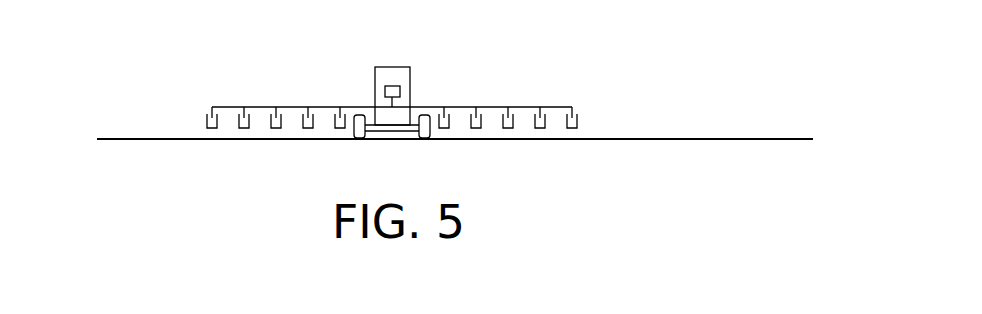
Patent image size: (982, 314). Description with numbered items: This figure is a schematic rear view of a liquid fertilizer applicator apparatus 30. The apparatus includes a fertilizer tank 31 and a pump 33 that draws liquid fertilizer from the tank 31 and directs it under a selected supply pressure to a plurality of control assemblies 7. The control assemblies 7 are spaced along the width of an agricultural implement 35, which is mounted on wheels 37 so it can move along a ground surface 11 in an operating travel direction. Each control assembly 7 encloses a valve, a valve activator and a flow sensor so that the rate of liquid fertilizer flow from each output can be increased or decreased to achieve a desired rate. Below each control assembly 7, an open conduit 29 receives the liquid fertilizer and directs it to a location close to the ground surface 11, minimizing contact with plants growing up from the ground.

The control assembly 7 is at (544, 109).
The ground surface 11 is at (737, 139).
The open conduit 29 is at (577, 121).
The liquid fertilizer applicator apparatus 30 is at (333, 72).
The fertilizer tank 31 is at (410, 67).
The pump 33 is at (392, 86).
The agricultural implement 35 is at (492, 107).
The wheels 37 is at (418, 134).